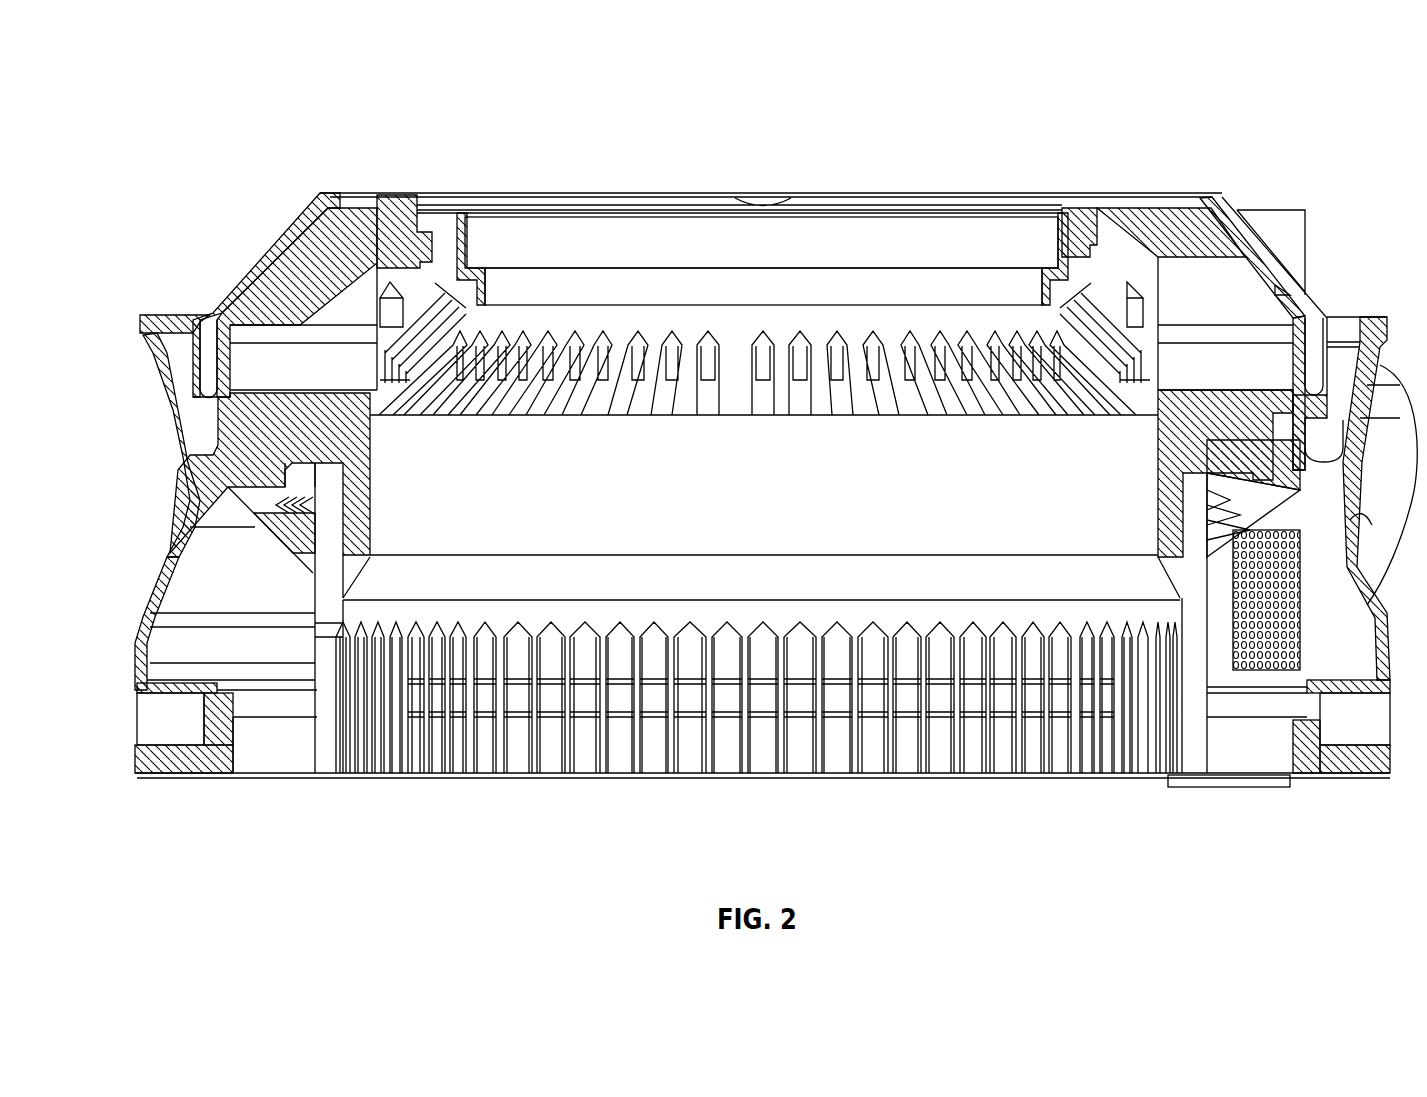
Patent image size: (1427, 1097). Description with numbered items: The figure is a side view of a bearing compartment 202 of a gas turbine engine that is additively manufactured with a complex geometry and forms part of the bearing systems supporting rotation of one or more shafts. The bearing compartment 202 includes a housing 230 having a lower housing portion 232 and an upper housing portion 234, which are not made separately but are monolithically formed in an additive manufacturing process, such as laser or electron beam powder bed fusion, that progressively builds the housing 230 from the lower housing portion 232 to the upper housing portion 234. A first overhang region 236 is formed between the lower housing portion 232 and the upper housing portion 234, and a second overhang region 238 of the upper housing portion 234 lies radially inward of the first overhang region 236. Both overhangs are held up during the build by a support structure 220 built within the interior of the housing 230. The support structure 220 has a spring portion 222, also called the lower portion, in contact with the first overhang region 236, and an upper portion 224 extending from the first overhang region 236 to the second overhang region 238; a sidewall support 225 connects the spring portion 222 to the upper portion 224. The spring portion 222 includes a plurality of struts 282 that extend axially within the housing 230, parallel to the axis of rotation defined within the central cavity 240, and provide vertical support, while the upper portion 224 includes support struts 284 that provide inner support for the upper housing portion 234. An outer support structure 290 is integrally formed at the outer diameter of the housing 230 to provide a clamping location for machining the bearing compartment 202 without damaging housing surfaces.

The bearing compartment 202 is at (292, 102).
The support structure 220 is at (418, 800).
The spring portion 222 is at (705, 590).
The upper portion 224 is at (950, 287).
The sidewall support 225 is at (920, 465).
The housing 230 is at (168, 556).
The lower housing portion 232 is at (140, 647).
The upper housing portion 234 is at (222, 313).
The first overhang region 236 is at (197, 477).
The second overhang region 238 is at (402, 213).
The central cavity 240 is at (640, 235).
The struts 282 is at (680, 747).
The support struts 284 is at (735, 352).
The outer support structure 290 is at (152, 726).